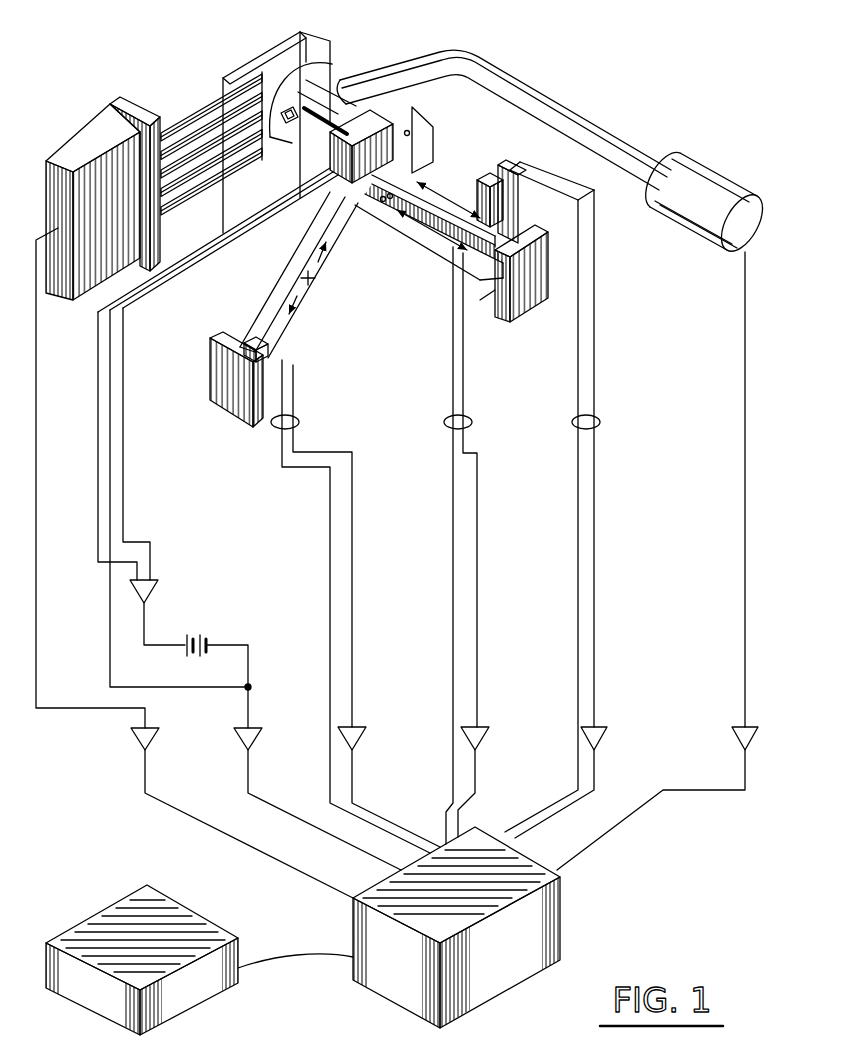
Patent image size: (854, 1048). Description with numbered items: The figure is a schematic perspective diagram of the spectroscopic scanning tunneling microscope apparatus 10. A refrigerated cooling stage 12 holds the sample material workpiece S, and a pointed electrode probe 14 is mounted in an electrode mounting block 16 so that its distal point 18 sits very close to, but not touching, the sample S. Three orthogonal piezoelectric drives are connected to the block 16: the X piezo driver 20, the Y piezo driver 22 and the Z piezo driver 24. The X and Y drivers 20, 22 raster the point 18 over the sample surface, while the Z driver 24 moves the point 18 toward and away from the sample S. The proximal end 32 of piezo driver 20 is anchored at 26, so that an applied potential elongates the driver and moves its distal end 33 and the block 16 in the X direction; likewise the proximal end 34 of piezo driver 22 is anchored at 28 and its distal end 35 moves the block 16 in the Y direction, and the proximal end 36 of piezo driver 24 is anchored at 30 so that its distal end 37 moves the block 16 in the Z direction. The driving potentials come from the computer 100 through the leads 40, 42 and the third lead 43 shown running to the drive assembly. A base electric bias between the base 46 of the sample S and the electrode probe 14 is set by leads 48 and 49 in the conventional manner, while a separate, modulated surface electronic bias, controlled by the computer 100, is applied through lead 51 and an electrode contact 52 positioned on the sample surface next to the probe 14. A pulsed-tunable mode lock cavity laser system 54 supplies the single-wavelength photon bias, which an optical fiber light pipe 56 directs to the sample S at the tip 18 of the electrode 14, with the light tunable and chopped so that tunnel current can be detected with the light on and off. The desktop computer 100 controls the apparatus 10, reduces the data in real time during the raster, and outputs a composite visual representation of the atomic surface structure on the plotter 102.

The SSTM apparatus 10 is at (210, 66).
The refrigerated cooling stage 12 is at (317, 33).
The pointed electrode probe 14 is at (345, 100).
The electrode mounting block 16 is at (372, 102).
The distal point of electrode probe 18 is at (262, 83).
The X piezo driver 20 is at (277, 283).
The Y piezo driver 22 is at (427, 178).
The Z piezo driver 24 is at (425, 235).
The anchor of X piezo driver 26 is at (209, 371).
The anchor of Y piezo driver 28 is at (528, 221).
The anchor of Z piezo driver 30 is at (530, 313).
The proximal end of X piezo driver 32 is at (244, 340).
The distal end of X piezo driver 33 is at (308, 232).
The proximal end of Y piezo driver 34 is at (505, 215).
The distal end of Y piezo driver 35 is at (410, 131).
The proximal end of Z piezo driver 36 is at (497, 285).
The distal end of Z piezo driver 37 is at (380, 215).
The lead 40 is at (300, 422).
The lead 42 is at (473, 422).
The cable 43 is at (601, 422).
The base of sample 46 is at (127, 98).
The lead 48 is at (270, 50).
The lead 49 is at (393, 158).
The lead 51 is at (300, 172).
The electrode contact 52 is at (283, 112).
The pulsed-tunable mode lock cavity laser system 54 is at (688, 228).
The optical fiber light pipe 56 is at (478, 52).
The computer 100 is at (562, 905).
The plotter 102 is at (107, 908).
The sample material workpiece S is at (305, 80).